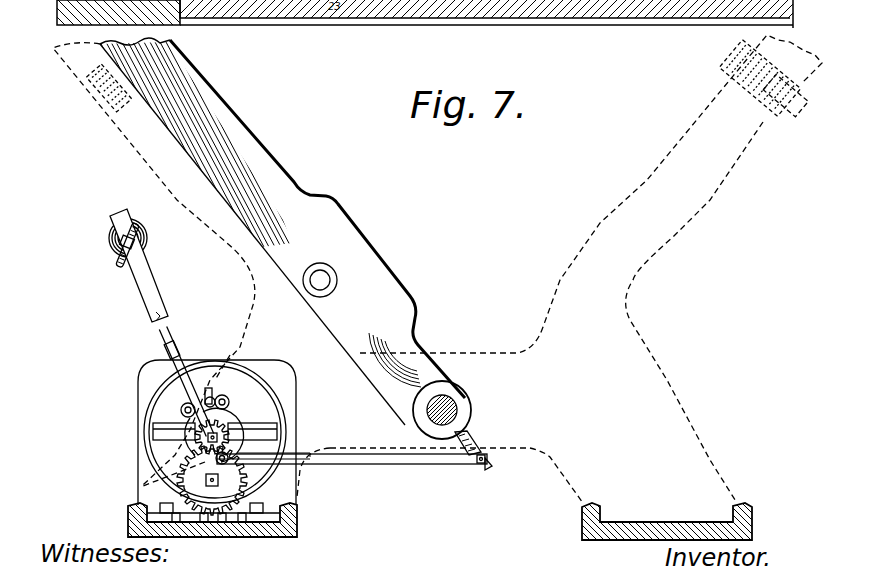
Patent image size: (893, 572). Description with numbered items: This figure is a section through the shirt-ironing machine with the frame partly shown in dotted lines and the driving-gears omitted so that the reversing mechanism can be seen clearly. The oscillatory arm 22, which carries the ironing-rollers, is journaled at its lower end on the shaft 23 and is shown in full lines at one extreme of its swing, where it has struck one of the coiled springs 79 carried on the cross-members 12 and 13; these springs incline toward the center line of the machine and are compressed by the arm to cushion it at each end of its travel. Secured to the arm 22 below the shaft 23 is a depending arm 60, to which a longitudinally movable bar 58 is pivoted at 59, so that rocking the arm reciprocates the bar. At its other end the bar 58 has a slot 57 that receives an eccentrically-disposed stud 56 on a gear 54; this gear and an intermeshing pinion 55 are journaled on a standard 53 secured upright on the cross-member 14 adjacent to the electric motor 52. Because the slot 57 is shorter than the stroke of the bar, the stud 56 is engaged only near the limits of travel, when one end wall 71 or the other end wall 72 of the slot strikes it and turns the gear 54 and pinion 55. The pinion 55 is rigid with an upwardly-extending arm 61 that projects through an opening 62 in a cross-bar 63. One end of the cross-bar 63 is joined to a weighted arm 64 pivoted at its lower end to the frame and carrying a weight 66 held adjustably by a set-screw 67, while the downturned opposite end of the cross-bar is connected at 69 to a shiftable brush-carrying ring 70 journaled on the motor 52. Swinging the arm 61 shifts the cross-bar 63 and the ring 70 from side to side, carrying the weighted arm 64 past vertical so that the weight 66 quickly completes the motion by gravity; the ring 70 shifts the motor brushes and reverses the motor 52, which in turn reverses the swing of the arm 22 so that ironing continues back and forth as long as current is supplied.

The cross-member 12 is at (108, 118).
The cross-member 13 is at (777, 113).
The cross-member 14 is at (293, 528).
The oscillatory arm 22 is at (386, 283).
The shaft 23 is at (452, 408).
The electric motor 52 is at (145, 440).
The standard 53 is at (190, 450).
The gear 54 is at (222, 492).
The pinion 55 is at (227, 420).
The stud 56 is at (262, 452).
The slot 57 is at (262, 460).
The bar 58 is at (404, 465).
The pivot 59 is at (485, 480).
The depending arm 60 is at (470, 440).
The upwardly-extending arm 61 is at (177, 385).
The opening 62 is at (173, 340).
The cross-bar 63 is at (183, 349).
The weighted arm 64 is at (157, 300).
The weight 66 is at (148, 239).
The set-screw 67 is at (122, 243).
The connection 69 is at (181, 410).
The brush-carrying ring 70 is at (240, 408).
The end wall 71 is at (300, 458).
The end wall 72 is at (165, 430).
The coiled spring 79 is at (93, 95).